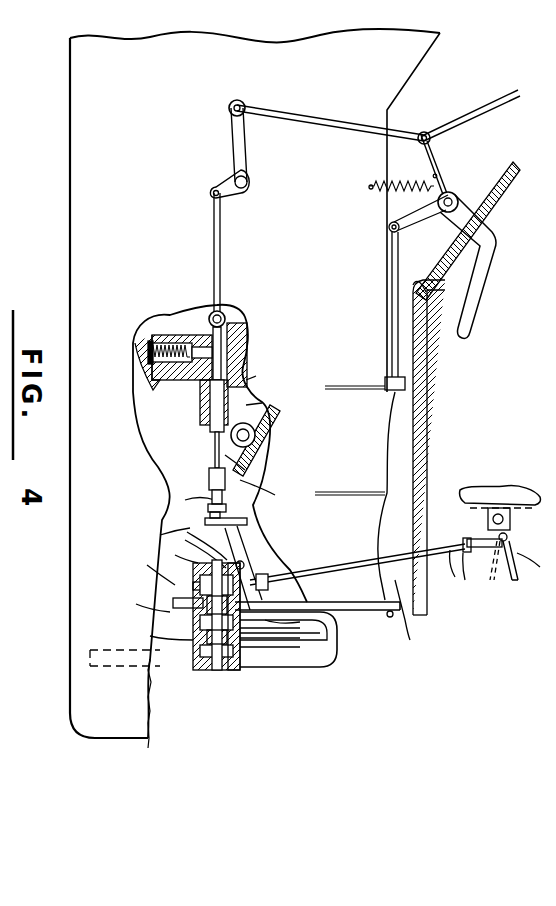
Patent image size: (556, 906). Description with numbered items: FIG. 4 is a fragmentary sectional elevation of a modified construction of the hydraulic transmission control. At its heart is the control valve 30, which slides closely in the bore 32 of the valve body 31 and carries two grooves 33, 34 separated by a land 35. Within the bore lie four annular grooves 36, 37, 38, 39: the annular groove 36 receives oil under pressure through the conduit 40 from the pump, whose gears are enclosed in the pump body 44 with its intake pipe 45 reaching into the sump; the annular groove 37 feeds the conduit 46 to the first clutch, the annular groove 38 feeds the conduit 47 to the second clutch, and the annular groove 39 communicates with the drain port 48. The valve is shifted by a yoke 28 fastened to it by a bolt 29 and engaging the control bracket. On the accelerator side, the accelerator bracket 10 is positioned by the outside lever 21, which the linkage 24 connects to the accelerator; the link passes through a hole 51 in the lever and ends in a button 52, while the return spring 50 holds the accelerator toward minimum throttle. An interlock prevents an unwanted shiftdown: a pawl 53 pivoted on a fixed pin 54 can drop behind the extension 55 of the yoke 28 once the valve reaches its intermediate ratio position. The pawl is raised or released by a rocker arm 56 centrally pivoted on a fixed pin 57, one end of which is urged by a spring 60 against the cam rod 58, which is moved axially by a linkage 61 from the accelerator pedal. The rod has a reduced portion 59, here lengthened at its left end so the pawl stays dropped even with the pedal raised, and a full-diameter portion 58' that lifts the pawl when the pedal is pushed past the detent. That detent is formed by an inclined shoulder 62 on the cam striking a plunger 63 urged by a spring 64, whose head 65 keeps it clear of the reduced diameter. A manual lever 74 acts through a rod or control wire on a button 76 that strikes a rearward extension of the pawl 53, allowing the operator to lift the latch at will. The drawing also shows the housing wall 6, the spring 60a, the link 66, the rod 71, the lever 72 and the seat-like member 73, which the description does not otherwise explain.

The machine frame 6 is at (255, 383).
The accelerator bracket 10 is at (282, 618).
The outside lever 21 is at (427, 362).
The linkage 24 is at (398, 295).
The yoke 28 is at (228, 499).
The bolt 29 is at (224, 500).
The control valve 30 is at (214, 672).
The valve body 31 is at (200, 672).
The bore 32 is at (214, 660).
The groove 33 is at (226, 672).
The groove 34 is at (245, 650).
The land 35 is at (238, 672).
The annular groove 36 is at (167, 632).
The annular groove 37 is at (173, 602).
The annular groove 38 is at (193, 585).
The annular groove 39 is at (185, 552).
The conduit 40 is at (312, 663).
The pump body 44 is at (407, 617).
The intake pipe 45 is at (155, 660).
The conduit 46 is at (149, 601).
The conduit 47 is at (157, 569).
The drain port 48 is at (204, 550).
The return spring 50 is at (418, 178).
The hole 51 is at (386, 485).
The button 52 is at (395, 392).
The pawl 53 is at (236, 531).
The fixed pin 54 is at (245, 568).
The extension 55 is at (172, 530).
The rocker arm 56 is at (150, 395).
The fixed pin 57 is at (191, 491).
The cam rod 58 is at (264, 435).
The full-diameter portion 58' is at (266, 490).
The reduced portion 59 is at (226, 478).
The spring 60 is at (256, 454).
The spring 60a is at (195, 362).
The linkage 61 is at (321, 128).
The inclined shoulder 62 is at (257, 387).
The plunger 63 is at (212, 365).
The spring 64 is at (165, 362).
The head 65 is at (213, 305).
The link 66 is at (490, 105).
The rod 71 is at (280, 578).
The lever 72 is at (494, 250).
The seat 73 is at (455, 565).
The lever 74 is at (499, 568).
The button 76 is at (268, 584).